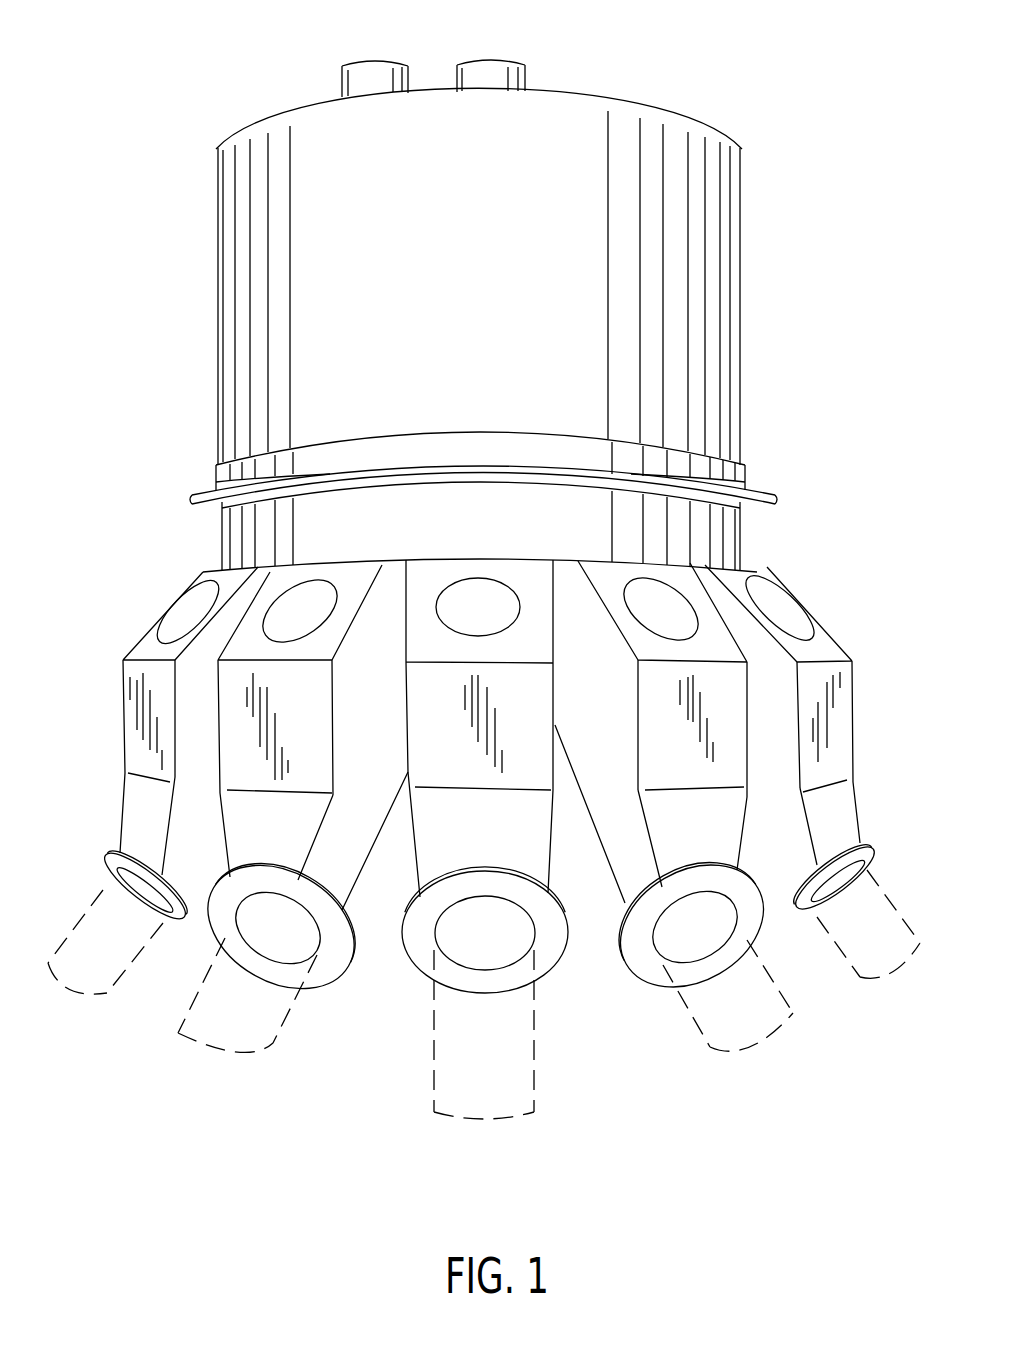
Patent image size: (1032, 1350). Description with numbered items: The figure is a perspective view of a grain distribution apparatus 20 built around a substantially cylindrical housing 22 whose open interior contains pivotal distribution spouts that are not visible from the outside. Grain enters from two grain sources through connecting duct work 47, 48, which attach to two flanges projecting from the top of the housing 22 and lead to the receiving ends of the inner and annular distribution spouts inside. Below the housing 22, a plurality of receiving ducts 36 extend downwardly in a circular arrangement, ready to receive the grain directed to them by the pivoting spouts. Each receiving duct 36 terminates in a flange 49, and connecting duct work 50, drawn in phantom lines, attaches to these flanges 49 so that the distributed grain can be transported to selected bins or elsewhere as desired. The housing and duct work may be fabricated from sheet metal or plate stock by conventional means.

The grain distribution apparatus 20 is at (740, 275).
The cylindrical housing 22 is at (222, 527).
The receiving ducts 36 is at (120, 813).
The connecting duct work 47 is at (490, 60).
The connecting duct work 48 is at (372, 62).
The flanges 49 is at (327, 973).
The connecting duct work 50 is at (270, 1040).